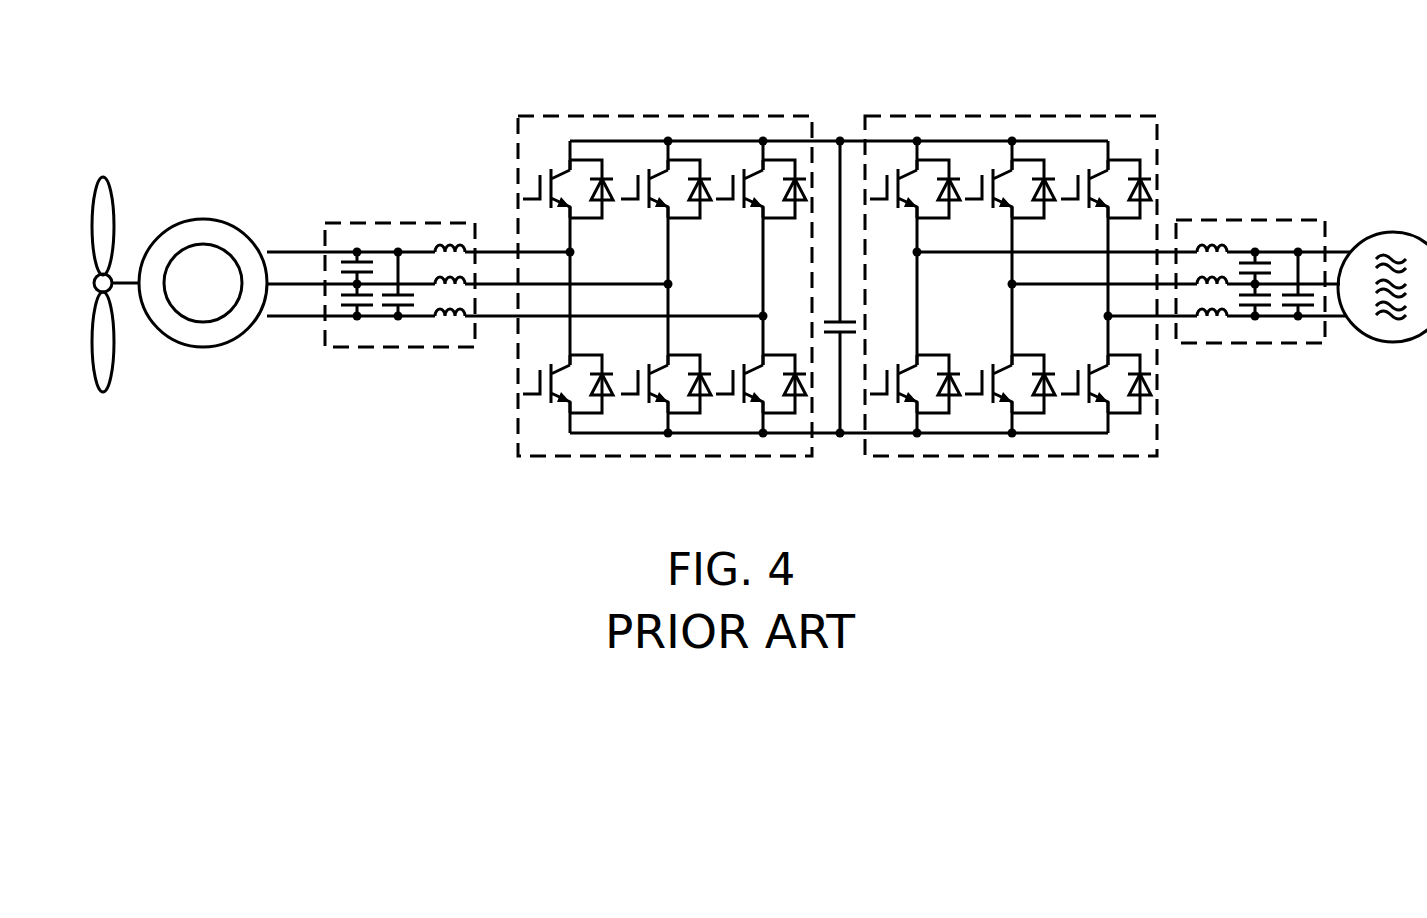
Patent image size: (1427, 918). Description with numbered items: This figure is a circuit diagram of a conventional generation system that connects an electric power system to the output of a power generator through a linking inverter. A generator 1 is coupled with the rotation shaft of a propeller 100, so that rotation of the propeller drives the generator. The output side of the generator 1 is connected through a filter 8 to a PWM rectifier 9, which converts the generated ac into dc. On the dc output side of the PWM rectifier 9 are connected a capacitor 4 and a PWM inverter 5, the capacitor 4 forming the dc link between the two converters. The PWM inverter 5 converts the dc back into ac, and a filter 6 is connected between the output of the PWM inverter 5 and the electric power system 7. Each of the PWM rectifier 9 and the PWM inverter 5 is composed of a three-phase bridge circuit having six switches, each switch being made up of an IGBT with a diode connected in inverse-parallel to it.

The propeller 100 is at (117, 190).
The generator 1 is at (240, 230).
The filter 8 is at (407, 223).
The PWM rectifier 9 is at (667, 116).
The capacitor 4 is at (830, 337).
The PWM inverter 5 is at (1013, 116).
The filter 6 is at (1256, 220).
The electric power system 7 is at (1393, 230).